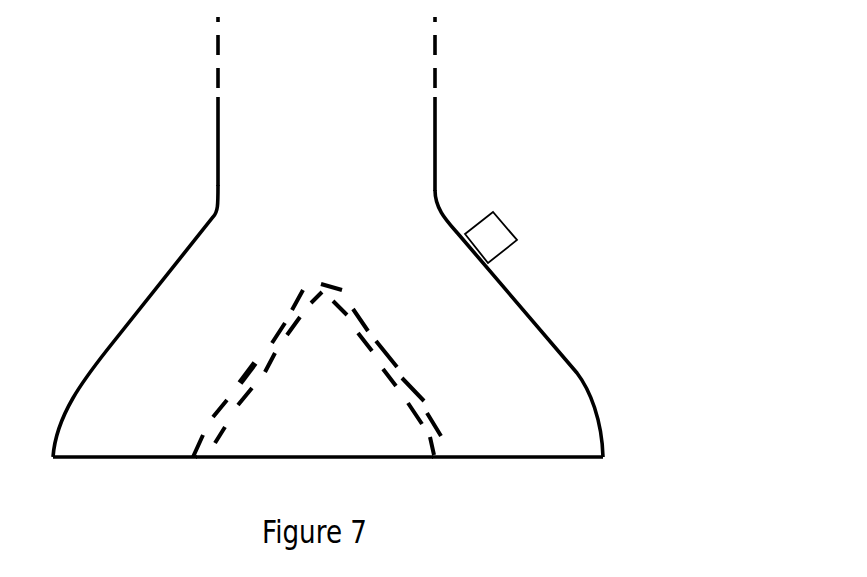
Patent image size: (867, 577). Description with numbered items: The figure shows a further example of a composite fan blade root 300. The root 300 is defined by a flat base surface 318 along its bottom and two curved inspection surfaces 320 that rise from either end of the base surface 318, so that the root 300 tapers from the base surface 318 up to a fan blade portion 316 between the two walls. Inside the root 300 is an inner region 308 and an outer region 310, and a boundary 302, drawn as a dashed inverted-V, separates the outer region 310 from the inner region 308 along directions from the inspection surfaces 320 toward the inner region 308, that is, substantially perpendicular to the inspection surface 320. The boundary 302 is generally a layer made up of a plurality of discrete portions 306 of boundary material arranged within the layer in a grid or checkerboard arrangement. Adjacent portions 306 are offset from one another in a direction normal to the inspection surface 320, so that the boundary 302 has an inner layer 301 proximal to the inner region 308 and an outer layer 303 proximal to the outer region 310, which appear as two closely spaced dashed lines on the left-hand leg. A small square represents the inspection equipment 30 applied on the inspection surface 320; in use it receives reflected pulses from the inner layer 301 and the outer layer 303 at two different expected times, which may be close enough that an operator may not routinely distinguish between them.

The composite fan blade root 300 is at (505, 328).
The equipment 30 is at (498, 232).
The inner layer 301 is at (229, 438).
The boundary 302 is at (205, 413).
The outer layer 303 is at (248, 367).
The discrete portion of boundary material 306 is at (334, 282).
The inner region 308 is at (337, 418).
The outer region 310 is at (174, 288).
The fan blade portion 316 is at (378, 122).
The base surface 318 is at (534, 458).
The inspection surface 320 is at (198, 233).